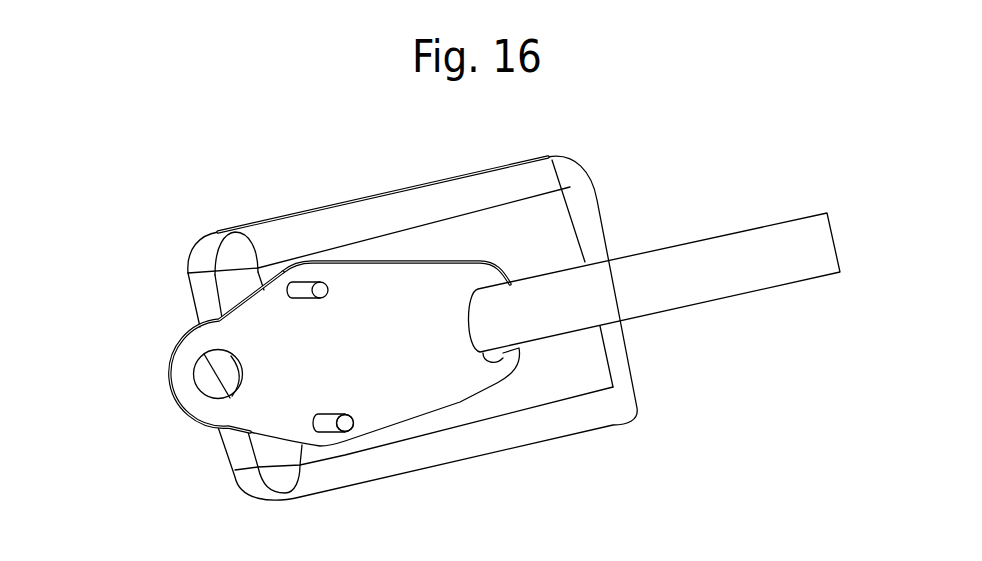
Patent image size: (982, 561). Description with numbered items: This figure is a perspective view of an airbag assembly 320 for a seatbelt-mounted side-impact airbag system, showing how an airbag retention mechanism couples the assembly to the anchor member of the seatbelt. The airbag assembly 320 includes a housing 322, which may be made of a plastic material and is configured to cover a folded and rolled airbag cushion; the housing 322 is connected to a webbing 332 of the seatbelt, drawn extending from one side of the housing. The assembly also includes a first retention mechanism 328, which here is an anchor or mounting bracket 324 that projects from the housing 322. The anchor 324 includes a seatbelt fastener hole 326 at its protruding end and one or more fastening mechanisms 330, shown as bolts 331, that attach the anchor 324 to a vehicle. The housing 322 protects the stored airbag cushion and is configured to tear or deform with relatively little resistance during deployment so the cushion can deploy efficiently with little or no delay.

The airbag assembly 320 is at (258, 196).
The housing 322 is at (203, 255).
The anchor or mounting bracket 324 is at (442, 385).
The seatbelt fastener hole 326 is at (183, 362).
The first retention mechanism 328 is at (148, 416).
The fastening mechanism 330 is at (348, 427).
The bolt 331 is at (333, 295).
The webbing 332 is at (747, 280).